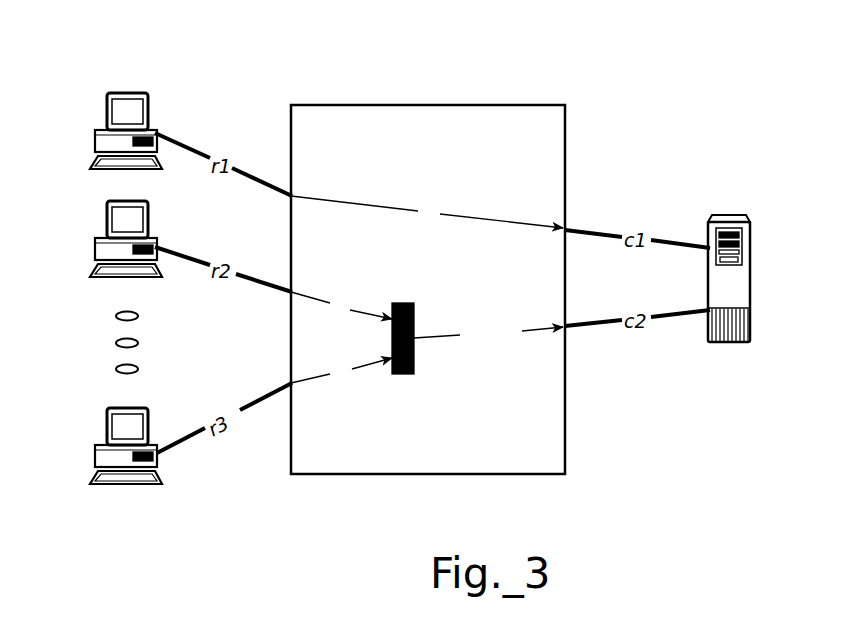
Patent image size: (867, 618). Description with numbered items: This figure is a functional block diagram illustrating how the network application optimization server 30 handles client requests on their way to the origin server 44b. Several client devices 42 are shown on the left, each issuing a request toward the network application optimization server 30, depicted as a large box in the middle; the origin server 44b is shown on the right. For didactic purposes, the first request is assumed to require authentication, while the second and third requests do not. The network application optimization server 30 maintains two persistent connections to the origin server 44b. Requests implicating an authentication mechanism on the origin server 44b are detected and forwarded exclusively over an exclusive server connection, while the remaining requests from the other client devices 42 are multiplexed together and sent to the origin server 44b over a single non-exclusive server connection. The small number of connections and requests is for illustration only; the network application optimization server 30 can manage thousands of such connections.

The client device 42 is at (95, 143).
The network application optimization server 30 is at (463, 105).
The origin server 44b is at (750, 310).